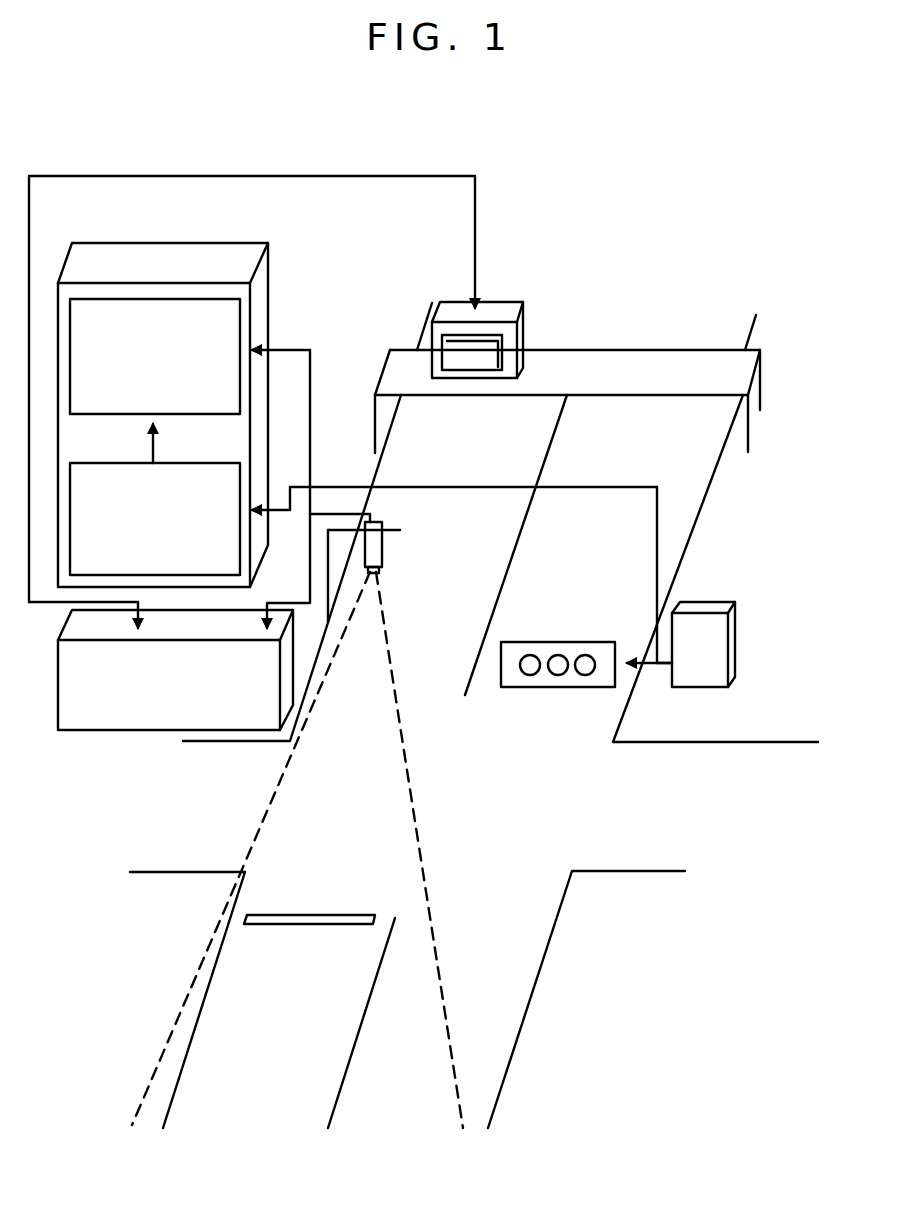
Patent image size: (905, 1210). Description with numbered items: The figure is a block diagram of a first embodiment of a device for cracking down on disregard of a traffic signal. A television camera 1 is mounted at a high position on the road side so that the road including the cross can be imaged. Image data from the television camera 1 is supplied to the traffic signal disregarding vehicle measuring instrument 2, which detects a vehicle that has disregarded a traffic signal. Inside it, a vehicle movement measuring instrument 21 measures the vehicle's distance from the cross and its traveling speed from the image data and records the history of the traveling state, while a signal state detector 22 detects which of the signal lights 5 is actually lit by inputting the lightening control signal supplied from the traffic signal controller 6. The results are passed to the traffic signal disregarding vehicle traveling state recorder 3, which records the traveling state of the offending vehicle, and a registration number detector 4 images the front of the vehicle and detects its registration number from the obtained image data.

The television camera 1 is at (385, 521).
The traffic signal disregarding vehicle measuring instrument 2 is at (163, 396).
The traffic signal disregarding vehicle traveling state recorder 3 is at (103, 732).
The registration number detector 4 is at (467, 301).
The signal lights 5 is at (557, 642).
The traffic signal controller 6 is at (702, 600).
The vehicle movement measuring instrument 21 is at (185, 415).
The signal state detector 22 is at (125, 463).